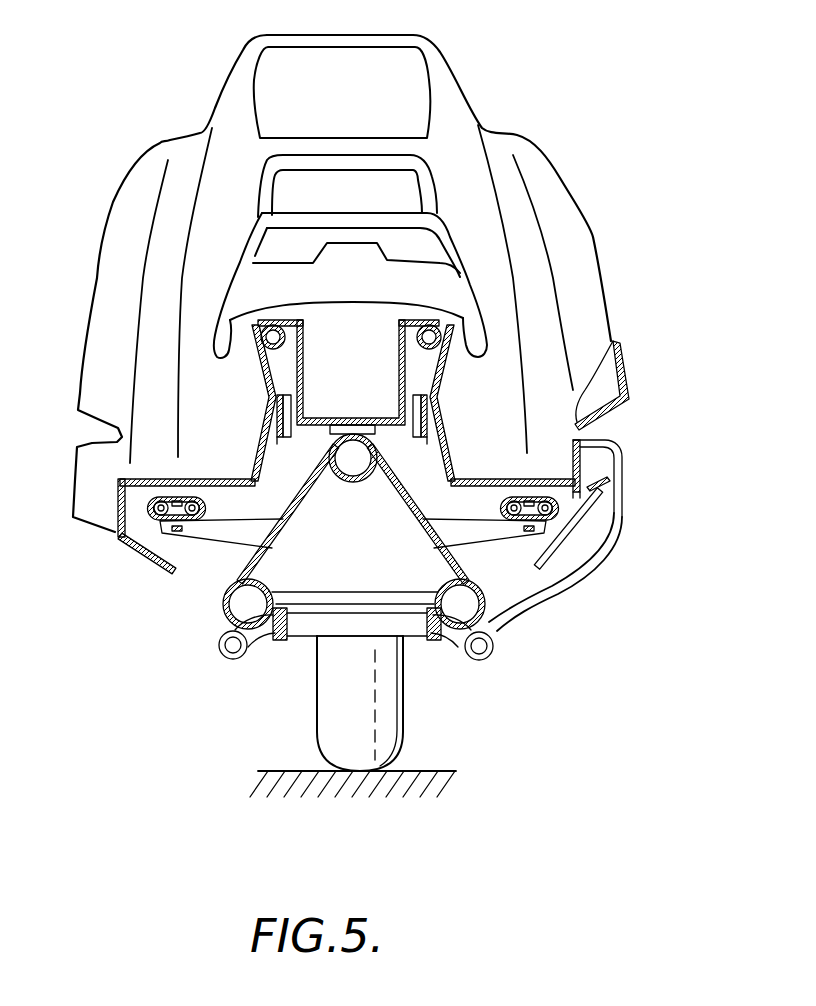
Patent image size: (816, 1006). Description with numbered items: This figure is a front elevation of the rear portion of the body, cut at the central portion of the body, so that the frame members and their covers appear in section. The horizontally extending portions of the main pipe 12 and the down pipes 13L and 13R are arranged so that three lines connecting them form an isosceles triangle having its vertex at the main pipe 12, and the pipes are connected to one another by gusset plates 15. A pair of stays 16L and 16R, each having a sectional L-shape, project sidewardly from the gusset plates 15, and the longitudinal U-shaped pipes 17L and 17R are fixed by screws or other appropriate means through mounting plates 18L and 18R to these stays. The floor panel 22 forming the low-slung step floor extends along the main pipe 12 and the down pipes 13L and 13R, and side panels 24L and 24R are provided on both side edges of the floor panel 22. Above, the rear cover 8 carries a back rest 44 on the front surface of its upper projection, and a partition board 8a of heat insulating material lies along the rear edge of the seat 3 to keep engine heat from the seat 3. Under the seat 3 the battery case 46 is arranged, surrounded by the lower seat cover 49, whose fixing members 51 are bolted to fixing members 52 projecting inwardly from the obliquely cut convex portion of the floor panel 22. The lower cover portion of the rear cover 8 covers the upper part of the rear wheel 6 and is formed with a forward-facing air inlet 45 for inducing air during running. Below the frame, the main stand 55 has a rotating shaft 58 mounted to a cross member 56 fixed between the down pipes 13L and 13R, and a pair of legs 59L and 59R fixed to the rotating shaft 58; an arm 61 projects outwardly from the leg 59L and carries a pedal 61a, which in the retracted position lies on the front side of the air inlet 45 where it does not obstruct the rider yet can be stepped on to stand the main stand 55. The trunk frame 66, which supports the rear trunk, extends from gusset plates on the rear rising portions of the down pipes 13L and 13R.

The seat 3 is at (223, 243).
The rear wheel 6 is at (318, 727).
The rear cover 8 is at (590, 222).
The partition board 8a is at (628, 397).
The main pipe 12 is at (355, 482).
The down pipe 13R is at (226, 606).
The down pipe 13L is at (500, 620).
The gusset plates 15 is at (283, 520).
The stay 16R is at (201, 535).
The stay 16L is at (493, 525).
The longitudinal U-shaped pipe 17R is at (204, 508).
The longitudinal U-shaped pipe 17L is at (503, 497).
The mounting plate 18R is at (157, 522).
The mounting plate 18L is at (577, 520).
The floor panel 22 is at (251, 473).
The side panel 24R is at (118, 536).
The side panel 24L is at (604, 520).
The back rest 44 is at (413, 70).
The air inlet 45 is at (604, 462).
The battery case 46 is at (305, 376).
The lower seat cover 49 is at (445, 365).
The fixing members 51 is at (276, 410).
The fixing members 52 is at (274, 437).
The main stand 55 is at (416, 643).
The cross member 56 is at (354, 598).
The rotating shaft 58 is at (327, 636).
The leg 59R is at (253, 652).
The leg 59L is at (470, 655).
The arm 61 is at (577, 582).
The pedal 61a is at (605, 484).
The trunk frame 66 is at (259, 347).